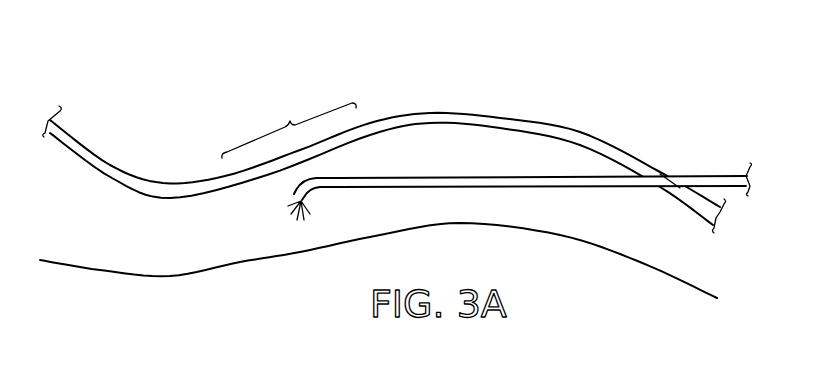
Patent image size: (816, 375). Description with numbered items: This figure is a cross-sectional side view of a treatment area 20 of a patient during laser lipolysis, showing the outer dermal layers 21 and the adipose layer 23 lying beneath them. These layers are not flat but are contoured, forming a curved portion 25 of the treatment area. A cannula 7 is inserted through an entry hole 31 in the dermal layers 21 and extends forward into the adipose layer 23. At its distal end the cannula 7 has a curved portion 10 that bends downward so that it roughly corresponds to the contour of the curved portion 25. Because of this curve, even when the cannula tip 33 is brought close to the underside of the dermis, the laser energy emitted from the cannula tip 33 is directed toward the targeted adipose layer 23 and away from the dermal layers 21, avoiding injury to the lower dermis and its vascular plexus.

The treatment area 20 is at (355, 39).
The dermal layers 21 is at (429, 113).
The adipose layer 23 is at (230, 241).
The curved portion 25 is at (290, 122).
The entry hole 31 is at (667, 176).
The cannula 7 is at (503, 186).
The curved portion 10 is at (310, 177).
The cannula tip 33 is at (306, 207).